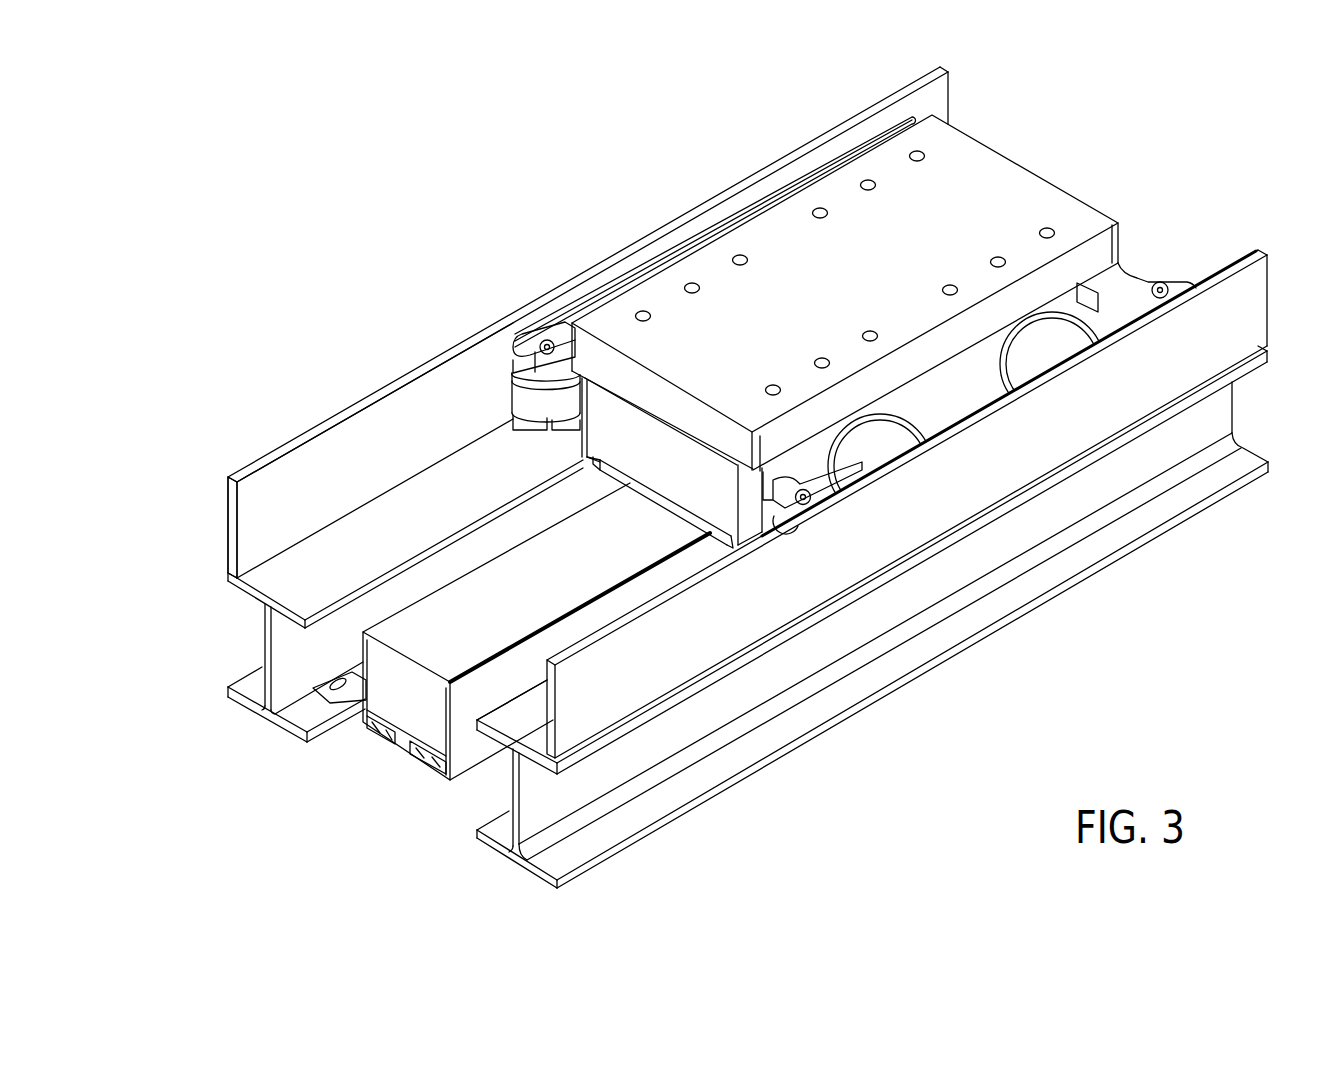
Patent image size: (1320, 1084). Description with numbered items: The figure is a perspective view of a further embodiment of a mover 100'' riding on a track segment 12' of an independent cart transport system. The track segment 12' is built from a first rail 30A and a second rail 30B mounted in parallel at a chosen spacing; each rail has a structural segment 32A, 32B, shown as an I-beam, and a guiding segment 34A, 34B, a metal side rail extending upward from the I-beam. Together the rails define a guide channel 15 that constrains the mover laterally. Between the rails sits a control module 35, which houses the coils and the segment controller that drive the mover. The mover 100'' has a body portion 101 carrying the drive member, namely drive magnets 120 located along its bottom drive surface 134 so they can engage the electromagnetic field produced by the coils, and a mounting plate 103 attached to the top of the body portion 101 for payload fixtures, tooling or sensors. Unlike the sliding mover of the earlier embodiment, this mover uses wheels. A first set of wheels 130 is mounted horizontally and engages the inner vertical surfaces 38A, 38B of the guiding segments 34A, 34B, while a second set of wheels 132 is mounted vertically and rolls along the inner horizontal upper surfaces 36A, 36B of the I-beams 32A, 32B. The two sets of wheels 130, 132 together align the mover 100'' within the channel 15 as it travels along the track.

The track segment 12' is at (299, 243).
The mover 100'' is at (822, 336).
The body portion 101 is at (678, 468).
The mounting plate 103 is at (825, 296).
The drive magnets 120 is at (655, 498).
The first set of wheels 130 is at (520, 397).
The second set of wheels 132 is at (885, 443).
The drive surface 134 is at (592, 472).
The guide channel 15 is at (258, 535).
The first rail 30A is at (540, 422).
The second rail 30B is at (830, 594).
The structural segment 32A is at (240, 703).
The structural segment 32B is at (530, 880).
The guiding segment 34A is at (228, 520).
The guiding segment 34B is at (632, 690).
The upper surface 36A is at (362, 564).
The upper surface 36B is at (505, 716).
The inner surface 38A is at (330, 498).
The inner surface 38B is at (536, 701).
The control module 35 is at (400, 708).